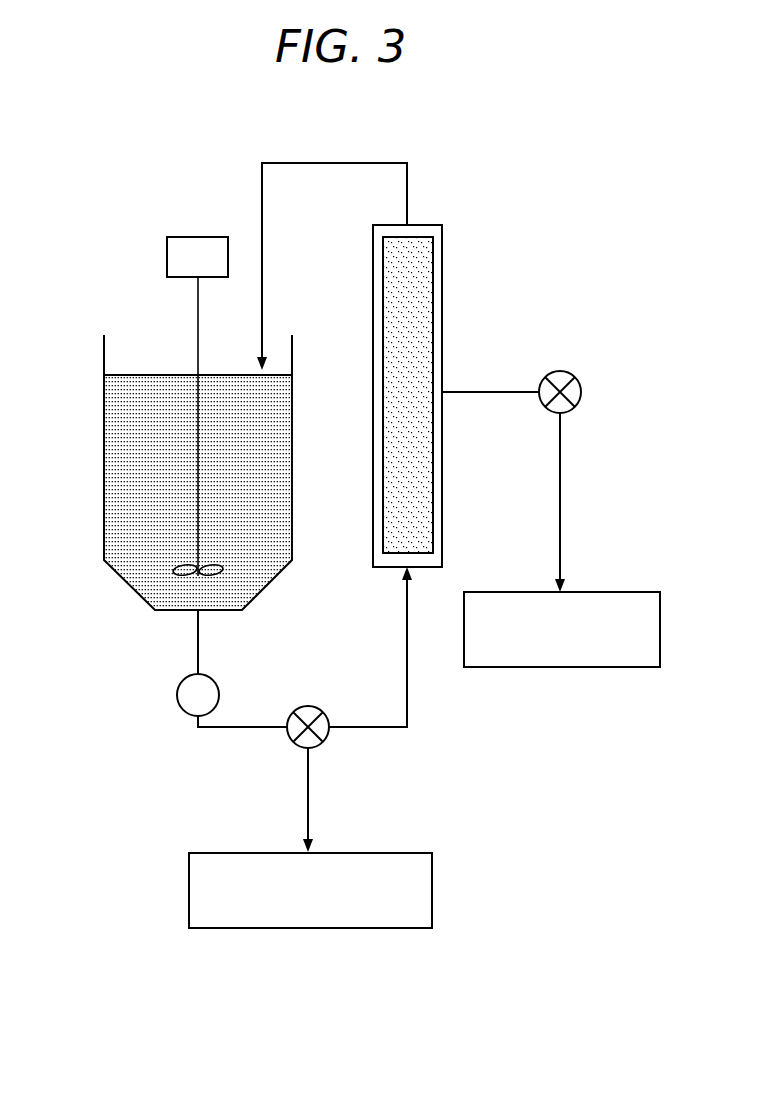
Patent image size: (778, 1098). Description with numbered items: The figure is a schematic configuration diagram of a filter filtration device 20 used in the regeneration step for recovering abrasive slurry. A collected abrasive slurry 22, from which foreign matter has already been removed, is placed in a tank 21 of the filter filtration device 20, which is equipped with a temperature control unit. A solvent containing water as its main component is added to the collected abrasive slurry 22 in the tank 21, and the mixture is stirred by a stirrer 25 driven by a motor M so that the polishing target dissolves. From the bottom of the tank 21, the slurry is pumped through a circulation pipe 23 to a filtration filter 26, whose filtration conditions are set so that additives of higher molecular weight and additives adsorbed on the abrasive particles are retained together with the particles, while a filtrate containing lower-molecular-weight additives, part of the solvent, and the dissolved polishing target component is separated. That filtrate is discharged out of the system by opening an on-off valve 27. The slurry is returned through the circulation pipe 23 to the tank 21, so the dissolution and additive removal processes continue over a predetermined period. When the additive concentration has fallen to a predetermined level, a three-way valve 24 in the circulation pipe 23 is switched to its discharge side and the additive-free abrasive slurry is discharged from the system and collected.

The filter filtration device 20 is at (524, 172).
The tank 21 is at (122, 580).
The collected abrasive slurry 22 is at (110, 455).
The circulation pipe 23 is at (258, 200).
The three-way valve 24 is at (330, 737).
The stirrer 25 is at (193, 305).
The filtration filter 26 is at (445, 240).
The on-off valve 27 is at (582, 383).
The motor M is at (165, 252).